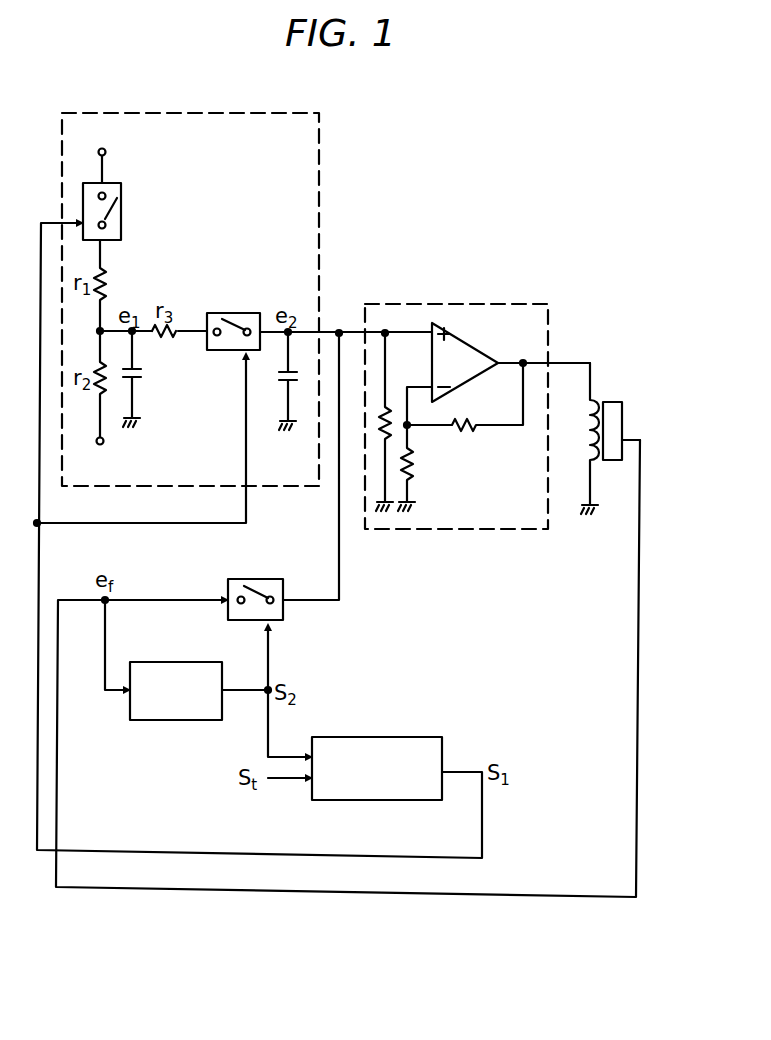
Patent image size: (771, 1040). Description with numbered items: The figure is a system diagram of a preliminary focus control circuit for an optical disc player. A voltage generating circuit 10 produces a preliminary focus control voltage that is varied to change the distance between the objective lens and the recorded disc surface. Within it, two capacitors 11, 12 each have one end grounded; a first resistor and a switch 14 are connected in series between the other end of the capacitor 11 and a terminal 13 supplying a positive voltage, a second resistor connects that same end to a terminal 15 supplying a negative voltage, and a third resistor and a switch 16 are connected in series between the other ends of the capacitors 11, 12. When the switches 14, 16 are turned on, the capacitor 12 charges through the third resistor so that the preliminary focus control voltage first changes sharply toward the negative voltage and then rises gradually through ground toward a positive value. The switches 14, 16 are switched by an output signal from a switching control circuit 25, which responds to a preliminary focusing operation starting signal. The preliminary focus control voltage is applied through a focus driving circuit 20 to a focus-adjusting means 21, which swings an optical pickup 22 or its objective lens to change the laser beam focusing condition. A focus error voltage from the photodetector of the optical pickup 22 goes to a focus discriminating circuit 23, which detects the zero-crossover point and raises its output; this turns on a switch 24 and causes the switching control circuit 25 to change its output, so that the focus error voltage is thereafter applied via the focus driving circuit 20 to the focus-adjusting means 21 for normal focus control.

The voltage generating circuit 10 is at (322, 132).
The capacitor 11 is at (147, 379).
The capacitor 12 is at (277, 381).
The terminal 13 is at (143, 162).
The switch 14 is at (122, 204).
The terminal 15 is at (117, 455).
The switch 16 is at (240, 313).
The focus driving circuit 20 is at (553, 327).
The focus-adjusting means 21 is at (589, 432).
The optical pickup 22 is at (610, 402).
The focus discriminating circuit 23 is at (193, 662).
The switch 24 is at (255, 579).
The switching control circuit 25 is at (412, 737).